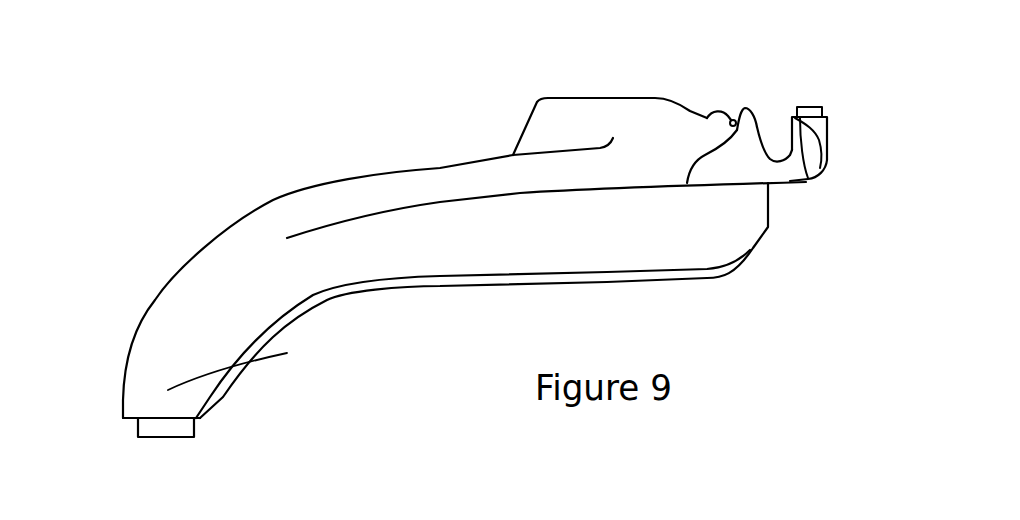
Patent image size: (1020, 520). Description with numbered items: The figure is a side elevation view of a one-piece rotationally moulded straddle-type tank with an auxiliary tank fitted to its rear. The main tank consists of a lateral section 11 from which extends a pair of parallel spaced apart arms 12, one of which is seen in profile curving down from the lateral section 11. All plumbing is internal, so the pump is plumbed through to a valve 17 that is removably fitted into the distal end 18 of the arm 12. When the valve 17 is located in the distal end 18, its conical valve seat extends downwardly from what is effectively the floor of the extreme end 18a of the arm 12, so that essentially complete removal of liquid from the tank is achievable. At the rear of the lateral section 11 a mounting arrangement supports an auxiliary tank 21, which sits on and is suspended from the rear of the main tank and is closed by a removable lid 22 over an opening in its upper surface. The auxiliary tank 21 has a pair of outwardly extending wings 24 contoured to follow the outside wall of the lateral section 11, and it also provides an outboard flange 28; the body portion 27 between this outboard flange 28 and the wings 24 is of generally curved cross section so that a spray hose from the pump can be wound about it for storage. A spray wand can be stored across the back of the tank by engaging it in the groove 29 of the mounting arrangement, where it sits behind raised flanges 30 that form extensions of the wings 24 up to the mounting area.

The lateral section 11 is at (553, 118).
The arm 12 is at (347, 188).
The valve 17 is at (167, 437).
The distal end 18 is at (287, 353).
The extreme end 18a is at (200, 421).
The auxiliary tank 21 is at (830, 138).
The removable lid 22 is at (814, 105).
The wings 24 is at (713, 167).
The body portion 27 is at (783, 167).
The outboard flange 28 is at (814, 160).
The groove 29 is at (731, 118).
The raised flanges 30 is at (750, 106).